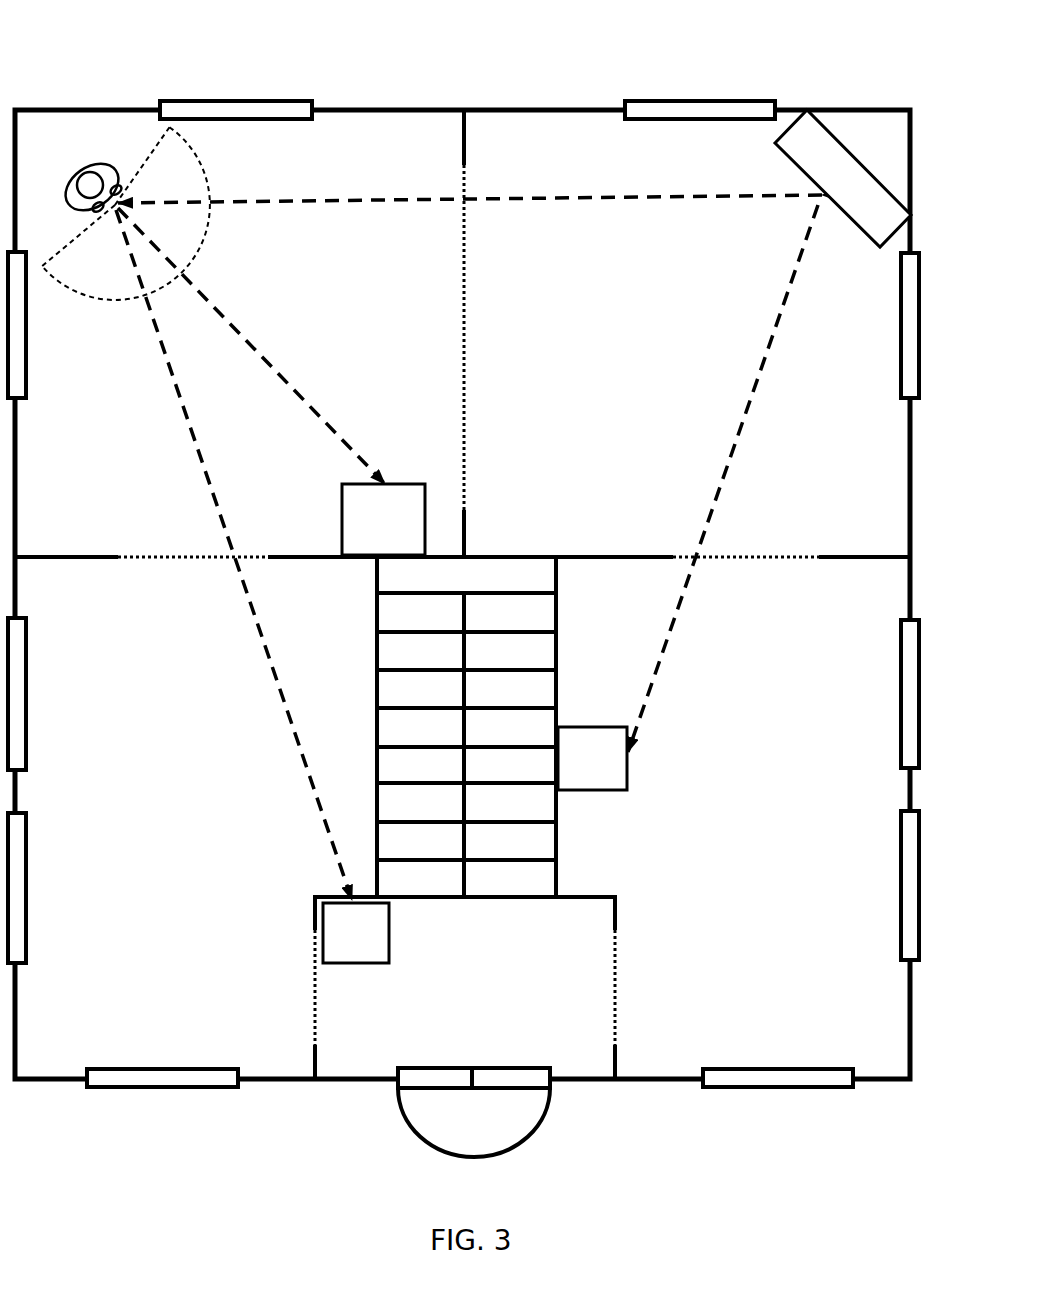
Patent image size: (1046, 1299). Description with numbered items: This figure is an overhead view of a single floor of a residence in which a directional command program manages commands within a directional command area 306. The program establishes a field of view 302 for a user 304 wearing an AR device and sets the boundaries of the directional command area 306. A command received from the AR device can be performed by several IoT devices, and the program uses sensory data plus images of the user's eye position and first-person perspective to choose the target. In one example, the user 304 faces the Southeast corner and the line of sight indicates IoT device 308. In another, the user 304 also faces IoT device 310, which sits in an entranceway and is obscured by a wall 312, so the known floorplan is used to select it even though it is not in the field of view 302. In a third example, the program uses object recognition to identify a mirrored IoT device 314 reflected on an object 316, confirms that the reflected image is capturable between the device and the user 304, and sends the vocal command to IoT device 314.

The field of view 302 is at (100, 301).
The user 304 is at (117, 167).
The directional command area 306 is at (852, 109).
The IoT device 308 is at (383, 519).
The IoT device 310 is at (356, 933).
The wall 312 is at (314, 907).
The IoT device 314 is at (592, 758).
The object 316 is at (815, 220).